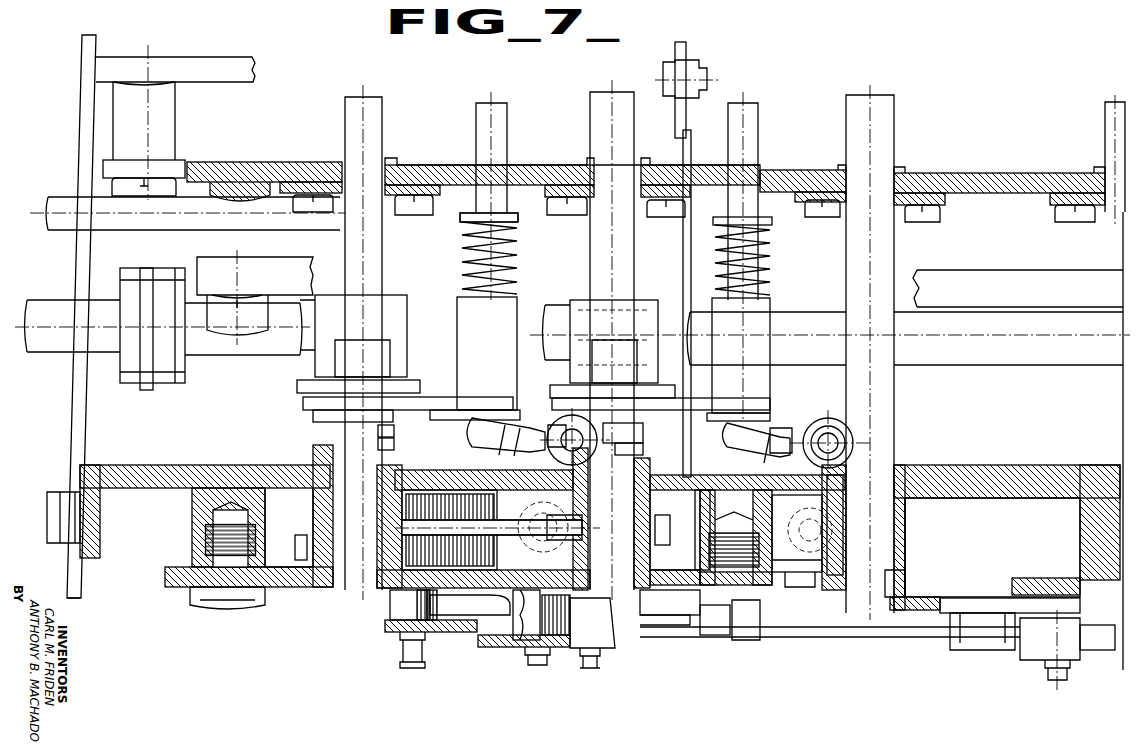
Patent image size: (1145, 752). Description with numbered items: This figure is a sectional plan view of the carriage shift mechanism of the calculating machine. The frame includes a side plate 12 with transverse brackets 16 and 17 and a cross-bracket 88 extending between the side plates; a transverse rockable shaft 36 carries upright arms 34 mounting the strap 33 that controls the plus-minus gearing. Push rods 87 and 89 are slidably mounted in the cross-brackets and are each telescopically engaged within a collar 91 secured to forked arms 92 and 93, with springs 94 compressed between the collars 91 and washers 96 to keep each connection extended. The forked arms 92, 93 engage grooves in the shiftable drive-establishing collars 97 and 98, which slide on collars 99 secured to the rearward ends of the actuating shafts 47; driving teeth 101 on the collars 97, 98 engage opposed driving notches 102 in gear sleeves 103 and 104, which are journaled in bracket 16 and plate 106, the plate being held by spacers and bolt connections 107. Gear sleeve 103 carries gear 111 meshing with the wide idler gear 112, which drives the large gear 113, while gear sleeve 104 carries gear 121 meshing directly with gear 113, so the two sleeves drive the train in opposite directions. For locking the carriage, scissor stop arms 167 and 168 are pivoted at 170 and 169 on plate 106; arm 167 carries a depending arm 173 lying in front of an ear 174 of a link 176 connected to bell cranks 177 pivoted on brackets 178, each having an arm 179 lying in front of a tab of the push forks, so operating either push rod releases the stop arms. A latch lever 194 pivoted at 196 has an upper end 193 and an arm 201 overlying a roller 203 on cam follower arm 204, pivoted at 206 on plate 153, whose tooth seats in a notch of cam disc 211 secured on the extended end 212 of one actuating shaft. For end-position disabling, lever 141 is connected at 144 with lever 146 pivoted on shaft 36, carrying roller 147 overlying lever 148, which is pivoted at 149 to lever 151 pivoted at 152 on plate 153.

The side plate 12 is at (82, 123).
The transverse bracket 17 is at (212, 66).
The actuating shaft 47 is at (345, 120).
The push rod 87 is at (476, 120).
The cross-bracket 88 is at (1004, 173).
The push rod 89 is at (758, 120).
The lever 141 is at (686, 48).
The pivotal and slidable connection 144 is at (712, 80).
The lever 146 is at (691, 155).
The transverse rockable shaft 36 is at (52, 300).
The strap 33 is at (179, 383).
The upright arm 34 is at (145, 390).
The washer 96 is at (772, 232).
The spring 94 is at (770, 263).
The collar 99 is at (395, 305).
The collar 91 is at (457, 323).
The forked arm 92 is at (435, 388).
The forked arm 93 is at (760, 404).
The drive-establishing collar 97 is at (297, 388).
The drive-establishing collar 98 is at (550, 388).
The driving teeth 101 is at (394, 433).
The driving notch 102 is at (388, 449).
The arm 179 is at (470, 433).
The bell crank 177 is at (554, 428).
The bracket 178 is at (545, 462).
The transverse bracket 16 is at (1038, 478).
The bolt connection 107 is at (192, 521).
The plate 106 is at (168, 587).
The gear sleeve 103 is at (313, 514).
The gear 111 is at (295, 542).
The wide idler gear 112 is at (430, 490).
The large gear 113 is at (390, 546).
The link 176 is at (705, 490).
The gear 121 is at (669, 542).
The gear sleeve 104 is at (632, 597).
The roller 203 is at (807, 607).
The scissor lever 168 is at (385, 632).
The pivot 169 is at (401, 642).
The latch lever 194 is at (426, 625).
The upper end of latch lever 193 is at (440, 620).
The pivot 196 is at (483, 615).
The scissor lever 167 is at (510, 640).
The ear 174 is at (542, 635).
The pivot 170 is at (565, 655).
The depending arm 173 is at (610, 625).
The roller 147 is at (690, 635).
The lever 148 is at (835, 637).
The cam disc 211 is at (905, 615).
The pivot 149 is at (975, 645).
The pivot 206 is at (1025, 650).
The lever 151 is at (1065, 650).
The pivot 152 is at (1090, 650).
The extended end of actuating shaft 212 is at (905, 530).
The arm 201 is at (875, 570).
The cam follower arm 204 is at (980, 598).
The plate 153 is at (1035, 578).